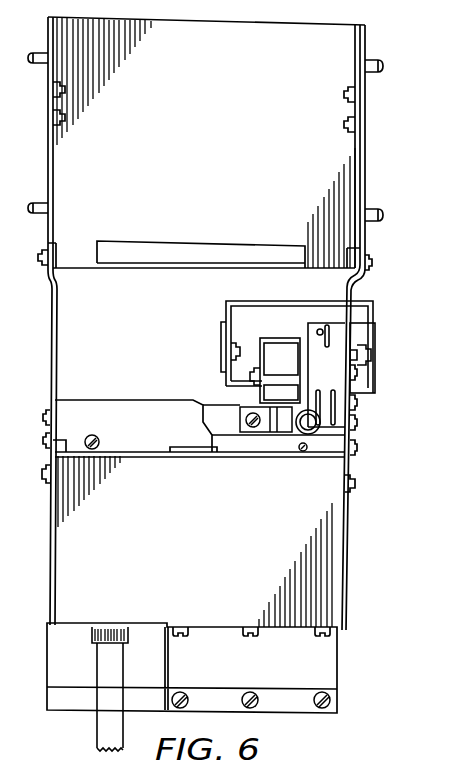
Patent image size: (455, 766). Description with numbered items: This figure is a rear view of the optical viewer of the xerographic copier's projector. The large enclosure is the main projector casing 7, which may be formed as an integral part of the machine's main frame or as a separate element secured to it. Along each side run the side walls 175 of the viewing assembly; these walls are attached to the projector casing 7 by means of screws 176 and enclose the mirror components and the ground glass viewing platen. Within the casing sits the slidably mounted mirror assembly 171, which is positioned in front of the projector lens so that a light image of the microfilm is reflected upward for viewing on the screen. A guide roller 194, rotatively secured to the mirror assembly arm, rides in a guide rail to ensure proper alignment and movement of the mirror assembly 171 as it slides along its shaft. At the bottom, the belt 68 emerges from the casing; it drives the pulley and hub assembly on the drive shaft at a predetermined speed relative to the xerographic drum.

The main projector casing 7 is at (342, 571).
The belt 68 is at (96, 733).
The mirror assembly 171 is at (219, 314).
The side walls 175 is at (51, 298).
The screws 176 is at (45, 470).
The guide roller 194 is at (292, 435).